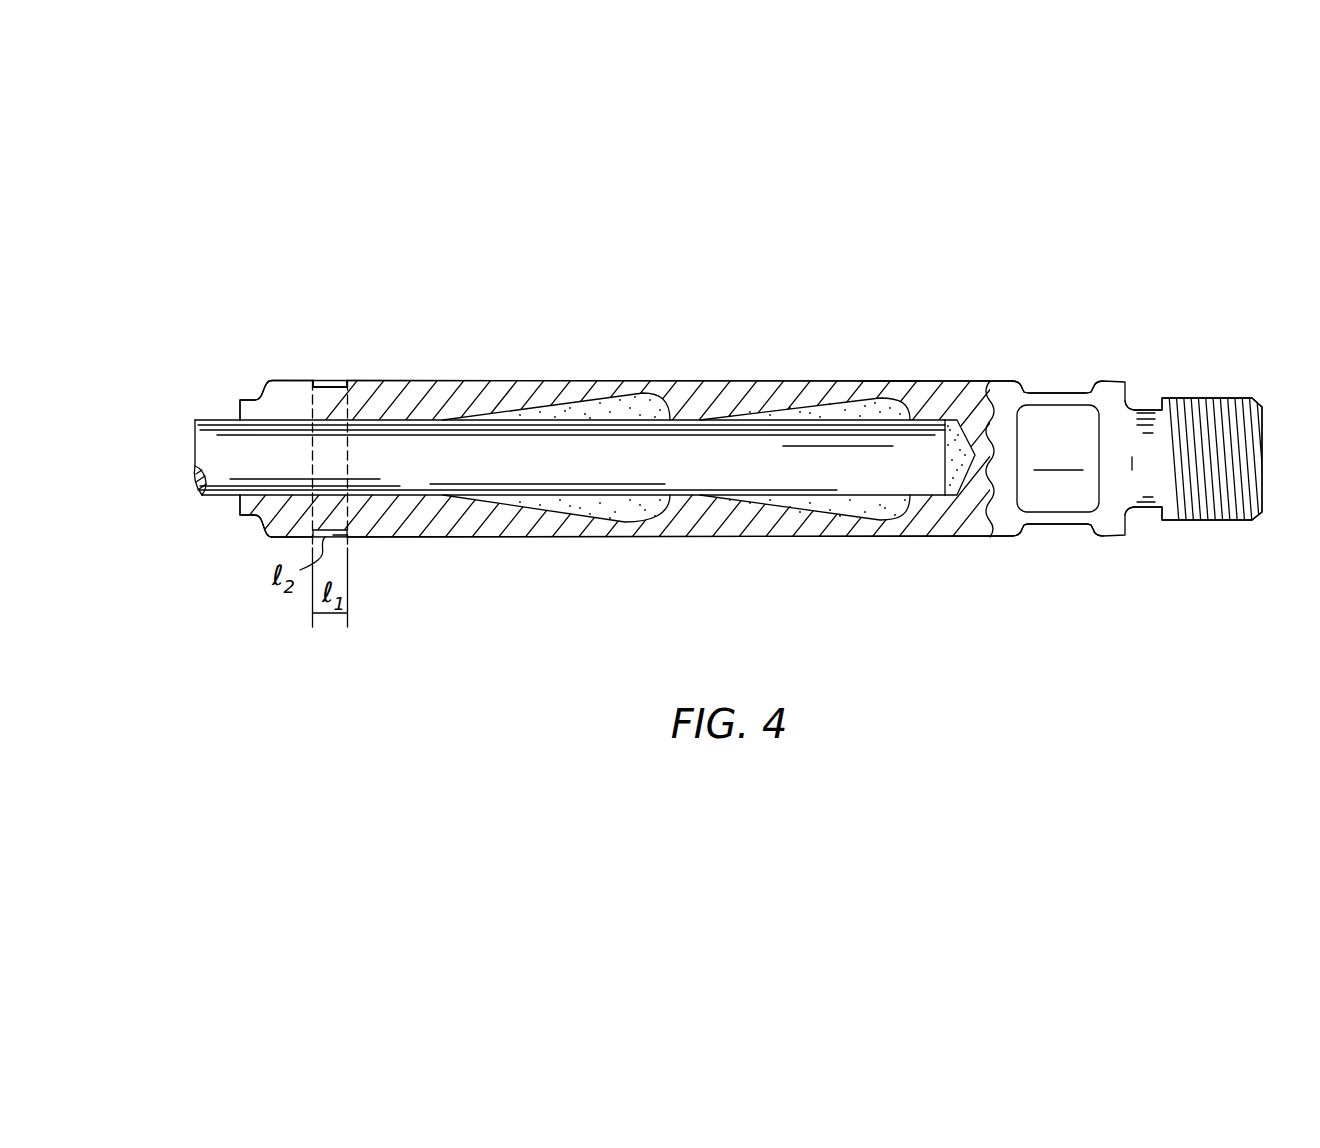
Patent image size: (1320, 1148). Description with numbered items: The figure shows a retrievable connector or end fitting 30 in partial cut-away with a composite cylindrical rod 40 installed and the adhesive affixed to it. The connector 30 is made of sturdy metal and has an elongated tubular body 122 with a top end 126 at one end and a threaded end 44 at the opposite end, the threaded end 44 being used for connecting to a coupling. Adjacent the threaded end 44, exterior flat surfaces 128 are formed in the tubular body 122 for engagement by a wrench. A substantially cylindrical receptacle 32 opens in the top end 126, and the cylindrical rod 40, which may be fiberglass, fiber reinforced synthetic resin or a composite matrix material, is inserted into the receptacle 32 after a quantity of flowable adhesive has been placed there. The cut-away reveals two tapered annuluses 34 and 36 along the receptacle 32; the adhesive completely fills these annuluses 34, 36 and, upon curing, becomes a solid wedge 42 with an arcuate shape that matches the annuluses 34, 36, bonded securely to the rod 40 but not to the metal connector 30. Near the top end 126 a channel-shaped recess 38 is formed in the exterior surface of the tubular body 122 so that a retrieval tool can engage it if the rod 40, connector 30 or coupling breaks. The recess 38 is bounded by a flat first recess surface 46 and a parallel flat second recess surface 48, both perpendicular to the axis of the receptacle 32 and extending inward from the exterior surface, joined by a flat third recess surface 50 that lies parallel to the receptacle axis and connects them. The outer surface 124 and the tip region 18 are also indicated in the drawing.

The distal tip 18 is at (957, 440).
The connector or end fitting 30 is at (1145, 408).
The receptacle 32 is at (383, 497).
The tapered annulus 34 is at (570, 402).
The tapered annulus 36 is at (830, 405).
The recess 38 is at (345, 333).
The cylindrical rod 40 is at (213, 418).
The wedge 42 is at (626, 512).
The threaded end 44 is at (1205, 521).
The first recess surface 46 is at (318, 378).
The second recess surface 48 is at (341, 378).
The third recess surface 50 is at (332, 384).
The tubular body 122 is at (883, 380).
The outer surface 124 is at (428, 379).
The top end 126 is at (240, 514).
The exterior flat surfaces 128 is at (1057, 392).